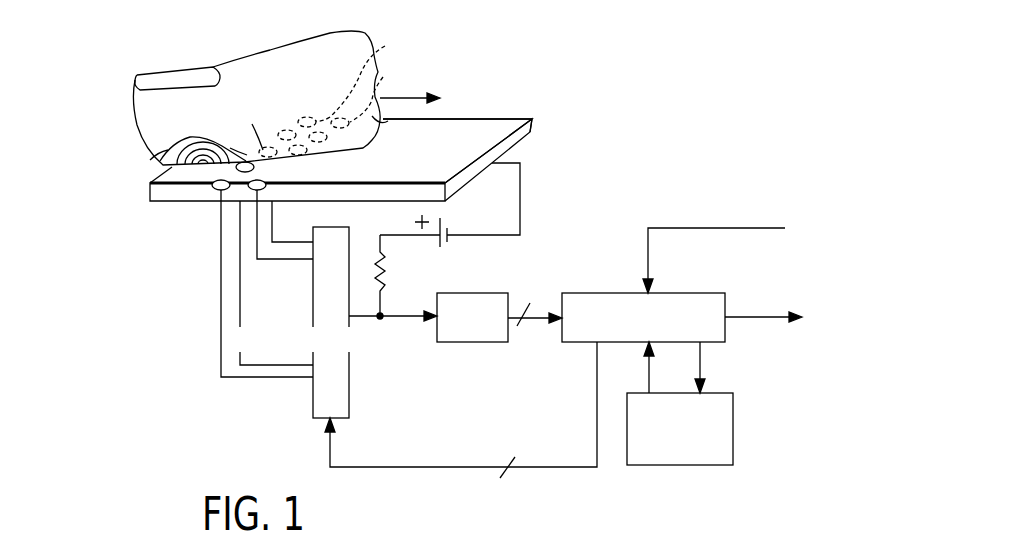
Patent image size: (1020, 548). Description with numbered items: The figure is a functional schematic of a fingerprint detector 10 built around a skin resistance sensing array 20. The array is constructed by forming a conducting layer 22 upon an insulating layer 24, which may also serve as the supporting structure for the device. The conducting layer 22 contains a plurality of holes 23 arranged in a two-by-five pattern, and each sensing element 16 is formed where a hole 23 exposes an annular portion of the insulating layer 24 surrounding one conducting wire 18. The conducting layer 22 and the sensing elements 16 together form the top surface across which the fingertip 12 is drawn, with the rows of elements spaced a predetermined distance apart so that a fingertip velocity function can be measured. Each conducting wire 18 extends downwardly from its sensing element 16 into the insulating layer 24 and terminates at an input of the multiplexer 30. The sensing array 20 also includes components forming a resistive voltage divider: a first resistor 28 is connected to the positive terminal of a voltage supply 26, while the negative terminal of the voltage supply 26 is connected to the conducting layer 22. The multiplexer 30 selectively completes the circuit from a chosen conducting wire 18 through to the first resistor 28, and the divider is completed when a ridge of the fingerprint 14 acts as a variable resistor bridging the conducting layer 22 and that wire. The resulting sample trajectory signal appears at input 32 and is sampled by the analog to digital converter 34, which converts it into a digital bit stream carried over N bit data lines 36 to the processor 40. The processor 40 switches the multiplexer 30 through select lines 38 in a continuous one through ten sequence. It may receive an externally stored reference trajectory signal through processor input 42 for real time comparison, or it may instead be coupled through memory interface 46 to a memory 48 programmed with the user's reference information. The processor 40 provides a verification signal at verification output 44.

The fingerprint detector 10 is at (632, 58).
The fingertip 12 is at (133, 126).
The fingerprint 14 is at (168, 161).
The sensing elements 16 is at (203, 197).
The conducting wires 18 is at (221, 275).
The skin resistance sensing array 20 is at (313, 180).
The conducting layer 22 is at (465, 119).
The holes 23 is at (385, 46).
The insulating layer 24 is at (523, 130).
The voltage supply 26 is at (462, 207).
The first resistor 28 is at (406, 270).
The multiplexer 30 is at (349, 383).
The input 32 is at (407, 318).
The analog to digital converter 34 is at (472, 342).
The N bit data lines 36 is at (532, 320).
The select lines 38 is at (536, 467).
The processor 40 is at (583, 293).
The processor input 42 is at (697, 228).
The verification output 44 is at (746, 317).
The memory interface 46 is at (649, 372).
The memory 48 is at (733, 428).